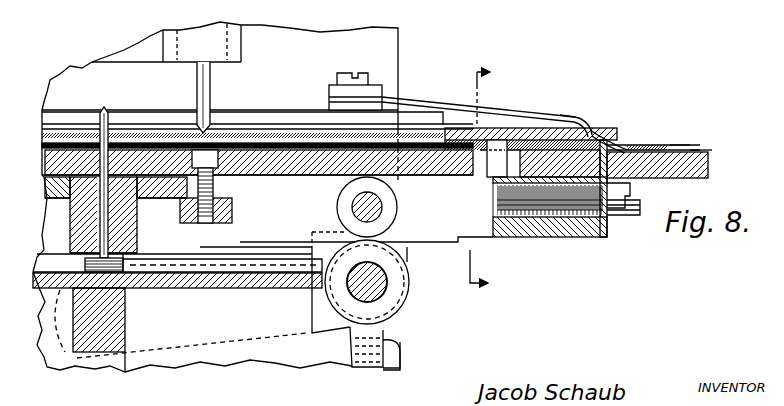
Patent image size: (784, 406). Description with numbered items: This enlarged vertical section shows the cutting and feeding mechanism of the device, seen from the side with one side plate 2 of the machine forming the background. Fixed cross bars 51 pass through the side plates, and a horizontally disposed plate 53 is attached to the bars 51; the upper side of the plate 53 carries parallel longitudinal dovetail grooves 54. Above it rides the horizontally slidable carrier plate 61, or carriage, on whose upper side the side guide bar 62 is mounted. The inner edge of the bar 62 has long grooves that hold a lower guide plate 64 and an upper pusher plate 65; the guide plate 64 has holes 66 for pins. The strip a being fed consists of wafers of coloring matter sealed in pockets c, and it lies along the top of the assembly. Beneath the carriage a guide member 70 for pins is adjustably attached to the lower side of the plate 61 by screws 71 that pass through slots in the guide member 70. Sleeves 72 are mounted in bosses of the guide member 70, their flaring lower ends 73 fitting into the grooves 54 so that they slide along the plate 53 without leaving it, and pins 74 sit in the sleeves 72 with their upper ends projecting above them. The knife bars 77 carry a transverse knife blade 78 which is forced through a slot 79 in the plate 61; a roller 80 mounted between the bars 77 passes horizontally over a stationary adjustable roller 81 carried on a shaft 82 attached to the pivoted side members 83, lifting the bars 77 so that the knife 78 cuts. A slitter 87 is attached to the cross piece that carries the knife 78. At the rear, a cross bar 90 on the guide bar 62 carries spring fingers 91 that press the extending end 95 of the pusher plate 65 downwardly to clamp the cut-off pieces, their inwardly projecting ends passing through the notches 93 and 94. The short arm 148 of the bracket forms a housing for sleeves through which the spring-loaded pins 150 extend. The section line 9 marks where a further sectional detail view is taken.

The side 2 is at (325, 47).
The short arm of L-shaped bracket 148 is at (243, 28).
The pin 150 is at (205, 88).
The side guide bar 62 is at (148, 115).
The guide plate 64 is at (253, 138).
The pusher plate 65 is at (298, 123).
The hole 66 is at (90, 137).
The guide member 70 is at (132, 232).
The screw 71 is at (232, 188).
The sleeve 72 is at (118, 268).
The flaring lower end of sleeve 73 is at (125, 258).
The pin 74 is at (132, 218).
The fixed cross bar 51 is at (107, 353).
The plate 53 is at (220, 285).
The dovetail groove 54 is at (277, 273).
The knife bar 77 is at (432, 238).
The roller 80 is at (392, 204).
The stationary adjustable roller 81 is at (404, 313).
The shaft 82 is at (388, 285).
The side member 83 is at (323, 323).
The slitter 87 is at (496, 158).
The cross bar 90 is at (380, 87).
The spring finger 91 is at (560, 112).
The notch 93 is at (590, 133).
The notch 94 is at (450, 123).
The extending end of pusher plate 95 is at (513, 127).
The transverse knife blade 78 is at (607, 147).
The slot 79 is at (647, 147).
The pocket c is at (672, 147).
The strip a is at (698, 147).
The carrier plate 61 is at (707, 168).
The section line 9 is at (476, 180).